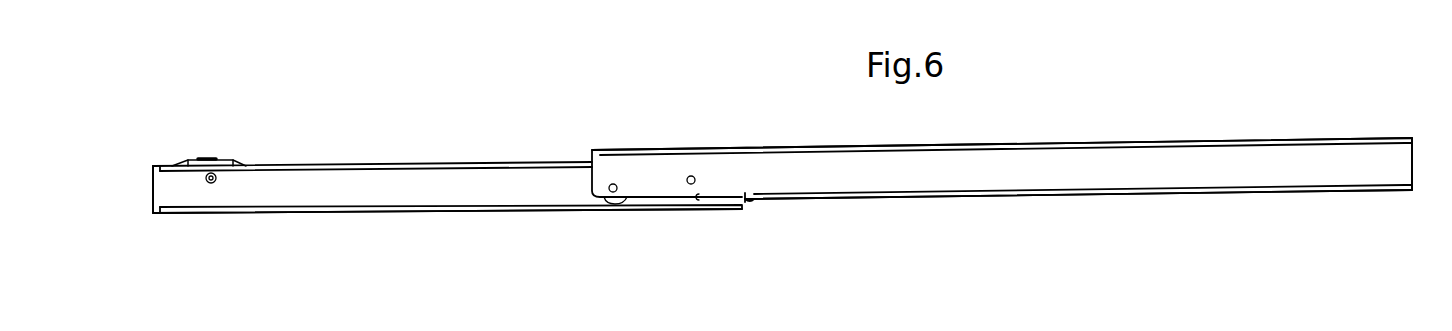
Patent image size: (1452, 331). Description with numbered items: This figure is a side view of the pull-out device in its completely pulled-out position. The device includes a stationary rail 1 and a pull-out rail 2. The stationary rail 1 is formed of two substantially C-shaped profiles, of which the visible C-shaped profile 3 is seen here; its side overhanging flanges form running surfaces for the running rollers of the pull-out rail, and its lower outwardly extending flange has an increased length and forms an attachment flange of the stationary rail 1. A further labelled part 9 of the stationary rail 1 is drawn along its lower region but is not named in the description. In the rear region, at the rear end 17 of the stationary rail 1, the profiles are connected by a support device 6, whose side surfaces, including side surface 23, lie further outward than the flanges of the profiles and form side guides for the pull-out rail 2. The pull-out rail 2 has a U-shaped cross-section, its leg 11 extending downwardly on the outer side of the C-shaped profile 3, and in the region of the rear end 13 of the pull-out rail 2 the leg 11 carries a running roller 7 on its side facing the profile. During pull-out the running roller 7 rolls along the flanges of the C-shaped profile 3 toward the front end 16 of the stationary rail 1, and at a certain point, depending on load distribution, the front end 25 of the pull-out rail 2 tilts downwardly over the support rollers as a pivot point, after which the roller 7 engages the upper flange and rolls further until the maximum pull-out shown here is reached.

The stationary rail 1 is at (345, 219).
The pull-out rail 2 is at (1126, 196).
The C-shaped profile 3 is at (247, 197).
The support device 6 is at (200, 159).
The running roller 7 is at (615, 203).
The bottom flange of first rail 9 is at (445, 207).
The leg 11 is at (938, 177).
The rear end of the pull-out rail 13 is at (592, 158).
The front end of the stationary rail 16 is at (747, 203).
The rear end of the stationary rail 17 is at (152, 188).
The side surface of the support device 23 is at (215, 158).
The front end of the pull-out rail 25 is at (1413, 163).